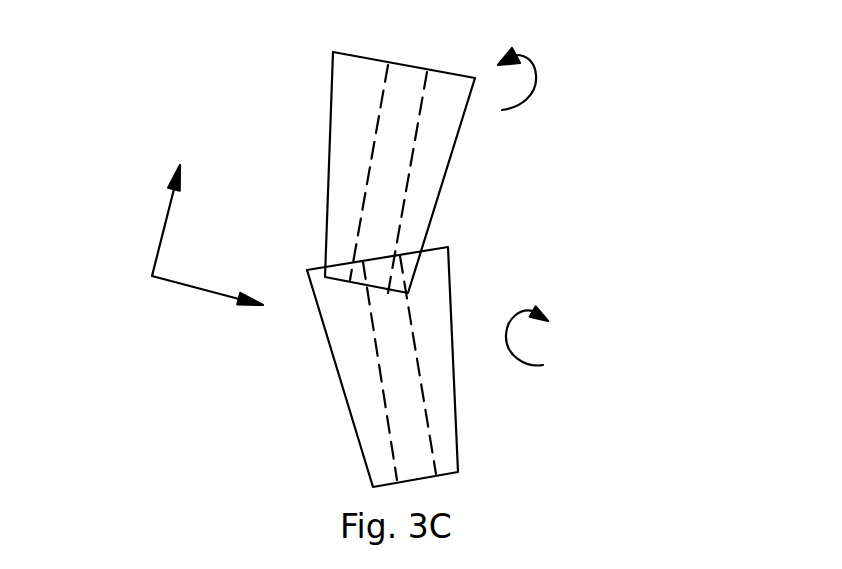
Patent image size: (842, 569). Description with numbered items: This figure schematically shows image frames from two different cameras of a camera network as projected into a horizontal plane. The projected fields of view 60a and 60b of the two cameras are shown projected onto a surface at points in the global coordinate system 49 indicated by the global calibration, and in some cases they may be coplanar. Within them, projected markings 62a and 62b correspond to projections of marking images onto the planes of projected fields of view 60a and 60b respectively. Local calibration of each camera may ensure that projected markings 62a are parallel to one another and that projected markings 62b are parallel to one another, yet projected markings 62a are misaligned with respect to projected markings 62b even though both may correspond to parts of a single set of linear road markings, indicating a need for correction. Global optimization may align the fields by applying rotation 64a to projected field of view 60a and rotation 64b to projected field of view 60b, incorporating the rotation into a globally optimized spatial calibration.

The projected field of view 60a is at (328, 137).
The projected field of view 60b is at (347, 402).
The projected markings 62a is at (365, 188).
The projected markings 62b is at (392, 445).
The rotation 64a is at (528, 62).
The rotation 64b is at (513, 311).
The global coordinate system 49 is at (168, 209).